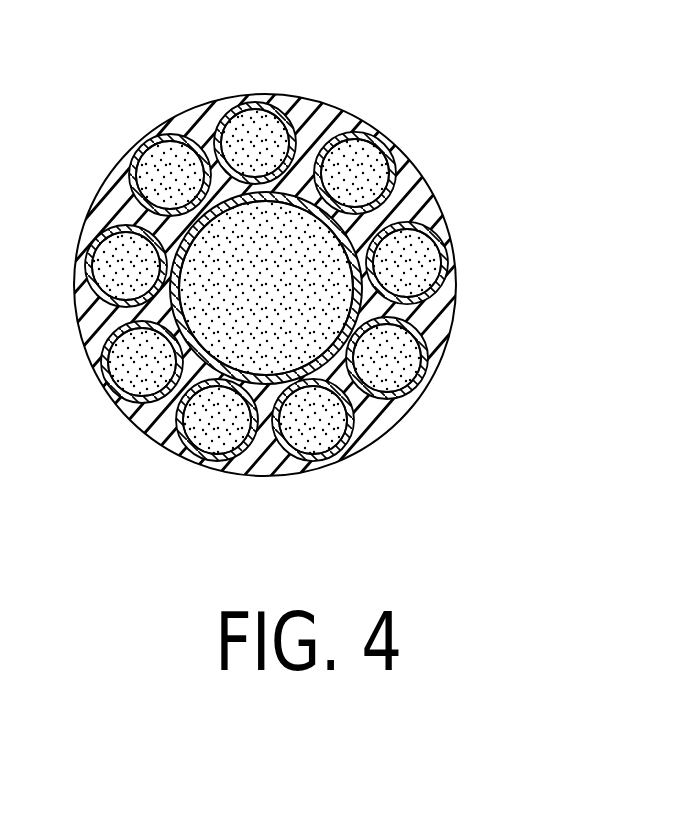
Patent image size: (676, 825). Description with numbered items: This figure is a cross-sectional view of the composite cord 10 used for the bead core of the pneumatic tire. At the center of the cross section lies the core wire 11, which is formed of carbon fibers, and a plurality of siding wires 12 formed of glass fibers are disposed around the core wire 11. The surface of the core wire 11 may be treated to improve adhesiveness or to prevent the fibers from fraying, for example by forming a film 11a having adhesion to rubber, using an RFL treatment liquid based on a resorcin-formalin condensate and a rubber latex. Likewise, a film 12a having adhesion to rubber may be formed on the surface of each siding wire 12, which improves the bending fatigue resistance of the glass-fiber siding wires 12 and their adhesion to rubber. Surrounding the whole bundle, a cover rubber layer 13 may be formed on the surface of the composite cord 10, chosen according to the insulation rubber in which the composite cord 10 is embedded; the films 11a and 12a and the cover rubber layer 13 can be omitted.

The composite cord 10 is at (157, 84).
The core wire 11 is at (268, 295).
The film 11a is at (268, 384).
The siding wire 12 is at (427, 226).
The film 12a is at (443, 272).
The cover rubber layer 13 is at (435, 333).